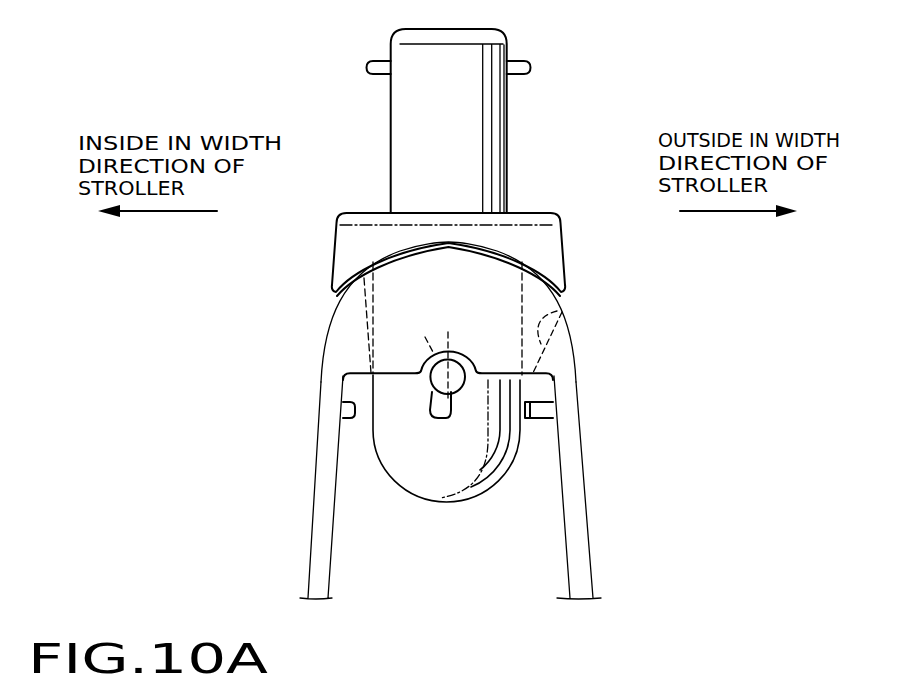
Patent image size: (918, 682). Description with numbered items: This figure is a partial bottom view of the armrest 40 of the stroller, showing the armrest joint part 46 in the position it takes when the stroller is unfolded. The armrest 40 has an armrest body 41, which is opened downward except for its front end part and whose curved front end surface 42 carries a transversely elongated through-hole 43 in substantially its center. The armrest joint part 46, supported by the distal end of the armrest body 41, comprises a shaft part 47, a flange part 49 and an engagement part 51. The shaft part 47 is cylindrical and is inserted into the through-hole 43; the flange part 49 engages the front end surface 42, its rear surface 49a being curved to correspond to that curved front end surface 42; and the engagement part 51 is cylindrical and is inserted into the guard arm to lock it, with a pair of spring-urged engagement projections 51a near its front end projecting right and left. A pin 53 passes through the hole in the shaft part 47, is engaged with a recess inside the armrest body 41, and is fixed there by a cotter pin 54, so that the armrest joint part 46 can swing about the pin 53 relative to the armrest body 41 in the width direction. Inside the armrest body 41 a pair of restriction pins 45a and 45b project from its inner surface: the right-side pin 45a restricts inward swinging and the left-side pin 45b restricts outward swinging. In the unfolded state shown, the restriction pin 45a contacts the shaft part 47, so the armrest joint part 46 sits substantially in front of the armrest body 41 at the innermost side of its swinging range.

The armrest 40 is at (247, 353).
The armrest body 41 is at (592, 540).
The front end surface 42 is at (513, 262).
The through-hole 43 is at (570, 311).
The restriction pin 45a is at (545, 412).
The restriction pin 45b is at (345, 410).
The armrest joint part 46 is at (431, 168).
The shaft part 47 is at (450, 487).
The flange part 49 is at (411, 245).
The rear surface 49a is at (419, 248).
The engagement part 51 is at (458, 110).
The engagement projections 51a is at (378, 62).
The pin 53 is at (462, 365).
The cotter pin 54 is at (425, 404).